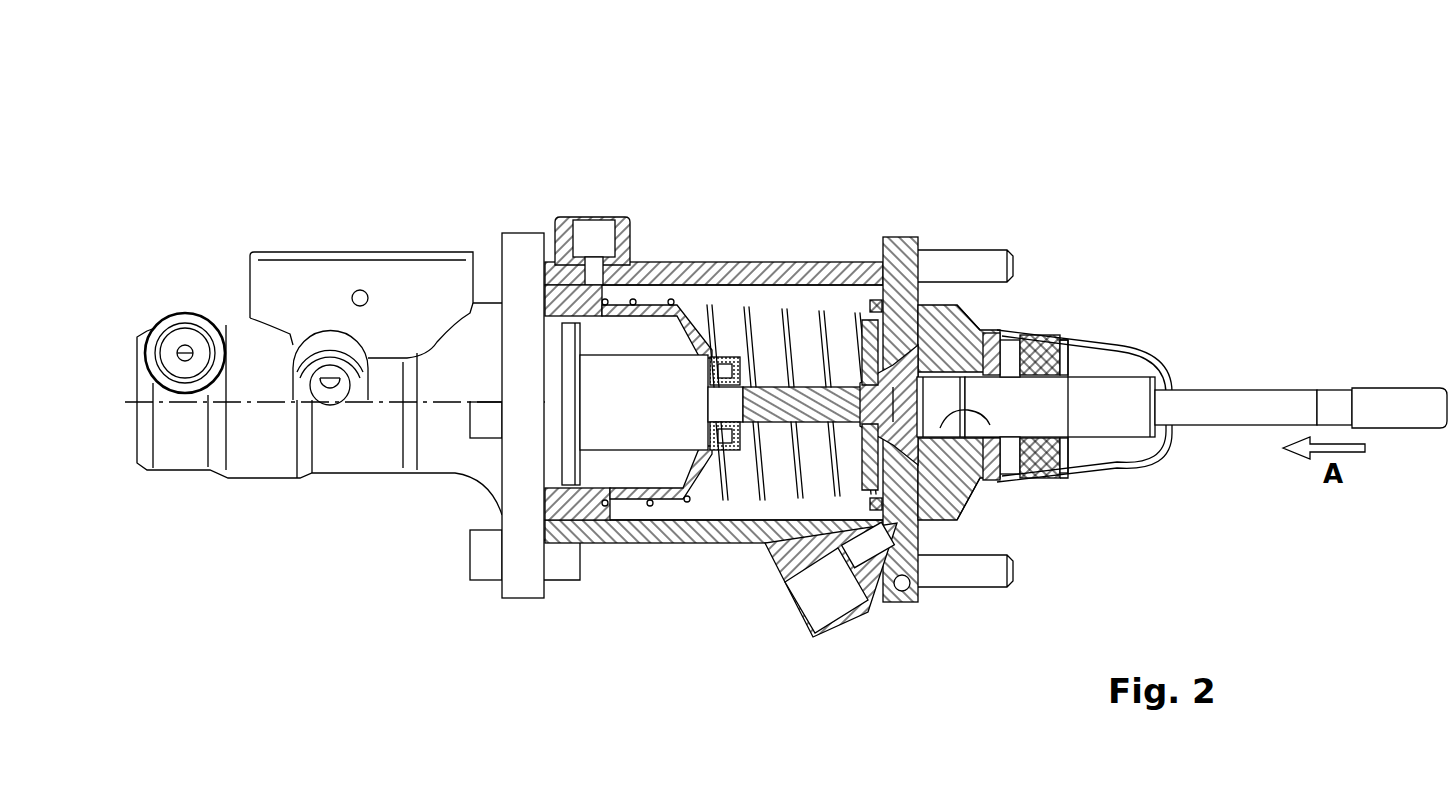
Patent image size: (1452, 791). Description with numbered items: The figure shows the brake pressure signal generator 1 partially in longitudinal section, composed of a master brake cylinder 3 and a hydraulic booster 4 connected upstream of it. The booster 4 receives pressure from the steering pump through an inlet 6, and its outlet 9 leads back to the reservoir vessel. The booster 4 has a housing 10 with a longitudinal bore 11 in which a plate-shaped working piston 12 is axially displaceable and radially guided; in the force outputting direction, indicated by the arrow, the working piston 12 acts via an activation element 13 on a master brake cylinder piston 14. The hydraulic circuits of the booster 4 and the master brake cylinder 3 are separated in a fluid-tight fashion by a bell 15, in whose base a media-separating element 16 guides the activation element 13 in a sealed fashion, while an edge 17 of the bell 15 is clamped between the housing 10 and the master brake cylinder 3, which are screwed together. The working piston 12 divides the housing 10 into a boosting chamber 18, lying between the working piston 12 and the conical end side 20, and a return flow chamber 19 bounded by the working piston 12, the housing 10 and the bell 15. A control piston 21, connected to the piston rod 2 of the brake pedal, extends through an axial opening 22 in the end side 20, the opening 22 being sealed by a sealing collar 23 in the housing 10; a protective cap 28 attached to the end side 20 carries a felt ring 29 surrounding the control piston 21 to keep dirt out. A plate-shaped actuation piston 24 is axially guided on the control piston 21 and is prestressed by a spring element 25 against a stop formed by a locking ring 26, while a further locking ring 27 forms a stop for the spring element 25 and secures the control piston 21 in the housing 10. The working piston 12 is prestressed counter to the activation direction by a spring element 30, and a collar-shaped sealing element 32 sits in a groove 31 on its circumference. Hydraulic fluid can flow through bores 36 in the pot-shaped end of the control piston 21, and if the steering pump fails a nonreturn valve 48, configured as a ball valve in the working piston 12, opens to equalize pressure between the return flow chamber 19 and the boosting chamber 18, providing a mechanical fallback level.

The brake pressure signal generator 1 is at (548, 182).
The piston rod 2 is at (1265, 407).
The master brake cylinder 3 is at (264, 457).
The hydraulic booster 4 is at (657, 255).
The inlet 6 is at (805, 600).
The outlet 9 is at (594, 232).
The housing 10 is at (693, 250).
The longitudinal bore 11 is at (725, 250).
The working piston 12 is at (849, 560).
The activation element 13 is at (778, 387).
The master brake cylinder piston 14 is at (615, 432).
The bell 15 is at (665, 490).
The media-separating element 16 is at (712, 487).
The edge 17 is at (553, 560).
The boosting chamber 18 is at (955, 507).
The return flow chamber 19 is at (738, 492).
The end side 20 is at (983, 493).
The control piston 21 is at (1057, 403).
The axial opening 22 is at (1035, 378).
The sealing collar 23 is at (1008, 347).
The actuation piston 24 is at (923, 303).
The spring element 25 is at (970, 500).
The locking ring 26 is at (966, 338).
The further locking ring 27 is at (1013, 332).
The protective cap 28 is at (1127, 347).
The felt ring 29 is at (1057, 453).
The spring element 30 is at (812, 325).
The groove 31 is at (848, 300).
The sealing element 32 is at (880, 300).
The bores 36 is at (1010, 445).
The nonreturn valve 48 is at (890, 430).